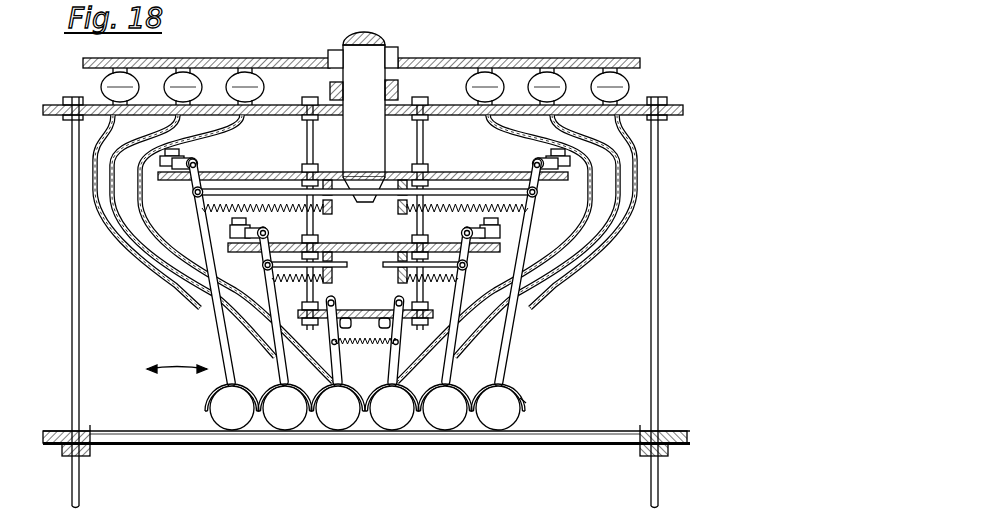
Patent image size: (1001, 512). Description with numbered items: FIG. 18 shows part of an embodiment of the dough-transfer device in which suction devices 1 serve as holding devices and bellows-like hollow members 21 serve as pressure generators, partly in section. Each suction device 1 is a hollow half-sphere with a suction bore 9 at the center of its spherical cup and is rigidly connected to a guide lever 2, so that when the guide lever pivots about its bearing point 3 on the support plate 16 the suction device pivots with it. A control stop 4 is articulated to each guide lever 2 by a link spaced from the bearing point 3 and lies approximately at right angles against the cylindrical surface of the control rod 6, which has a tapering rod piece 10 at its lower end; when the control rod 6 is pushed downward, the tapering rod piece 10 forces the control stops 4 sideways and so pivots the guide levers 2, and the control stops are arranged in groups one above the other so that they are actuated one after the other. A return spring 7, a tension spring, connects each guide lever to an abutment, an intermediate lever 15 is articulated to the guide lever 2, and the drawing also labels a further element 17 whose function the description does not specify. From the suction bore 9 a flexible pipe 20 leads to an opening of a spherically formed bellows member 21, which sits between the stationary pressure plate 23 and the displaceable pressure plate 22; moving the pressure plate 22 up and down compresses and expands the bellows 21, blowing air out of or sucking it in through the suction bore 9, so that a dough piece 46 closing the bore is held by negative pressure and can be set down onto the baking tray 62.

The suction device 1 is at (522, 404).
The guide lever 2 is at (203, 218).
The bearing point 3 is at (200, 163).
The control stop 4 is at (268, 190).
The control rod 6 is at (370, 66).
The return spring 7 is at (228, 212).
The suction bore 9 is at (503, 400).
The tapering rod piece 10 is at (361, 193).
The intermediate lever 15 is at (83, 317).
The support plate 16 is at (303, 177).
The threaded post 17 is at (308, 127).
The flexible pipe 20 is at (558, 275).
The bellows-like hollow member 21 is at (588, 69).
The displaceable pressure plate 22 is at (443, 62).
The stationary pressure plate 23 is at (677, 103).
The dough piece 46 is at (510, 420).
The baking tray 62 is at (193, 432).